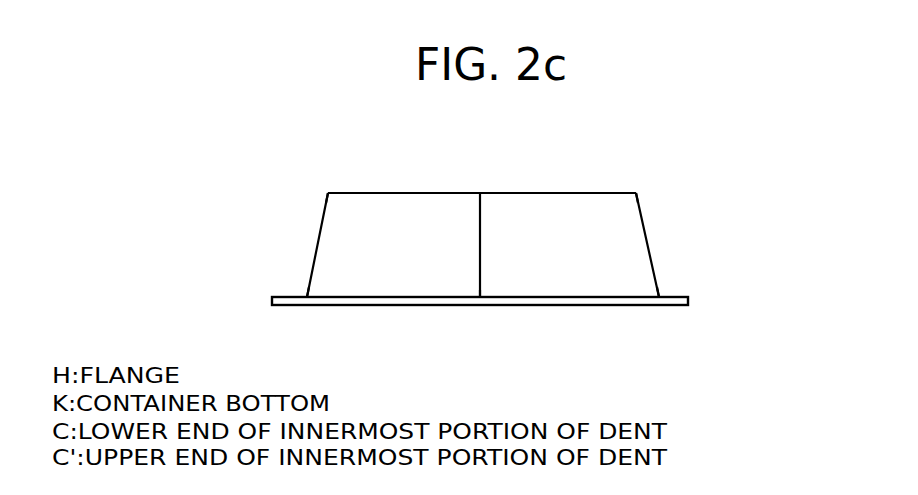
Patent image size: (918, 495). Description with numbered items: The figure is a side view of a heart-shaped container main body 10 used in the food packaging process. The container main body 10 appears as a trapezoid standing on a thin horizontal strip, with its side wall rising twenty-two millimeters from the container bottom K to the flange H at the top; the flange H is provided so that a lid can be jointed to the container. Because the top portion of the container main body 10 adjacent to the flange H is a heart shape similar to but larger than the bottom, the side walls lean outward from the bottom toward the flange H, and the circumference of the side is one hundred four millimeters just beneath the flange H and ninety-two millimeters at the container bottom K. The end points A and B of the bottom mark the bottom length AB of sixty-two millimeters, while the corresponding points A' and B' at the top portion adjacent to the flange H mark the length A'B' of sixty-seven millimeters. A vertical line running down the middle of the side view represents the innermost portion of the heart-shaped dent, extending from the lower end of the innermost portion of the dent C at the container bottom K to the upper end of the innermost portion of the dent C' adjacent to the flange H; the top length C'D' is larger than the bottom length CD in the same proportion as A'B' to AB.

The container main body 10 is at (432, 187).
The flange H is at (381, 306).
The container bottom K is at (560, 193).
The lower end of innermost portion of dent C is at (496, 221).
The upper end of innermost portion of dent C' is at (494, 329).
The point A is at (304, 172).
The point A' is at (274, 274).
The point B is at (651, 175).
The point B' is at (699, 277).